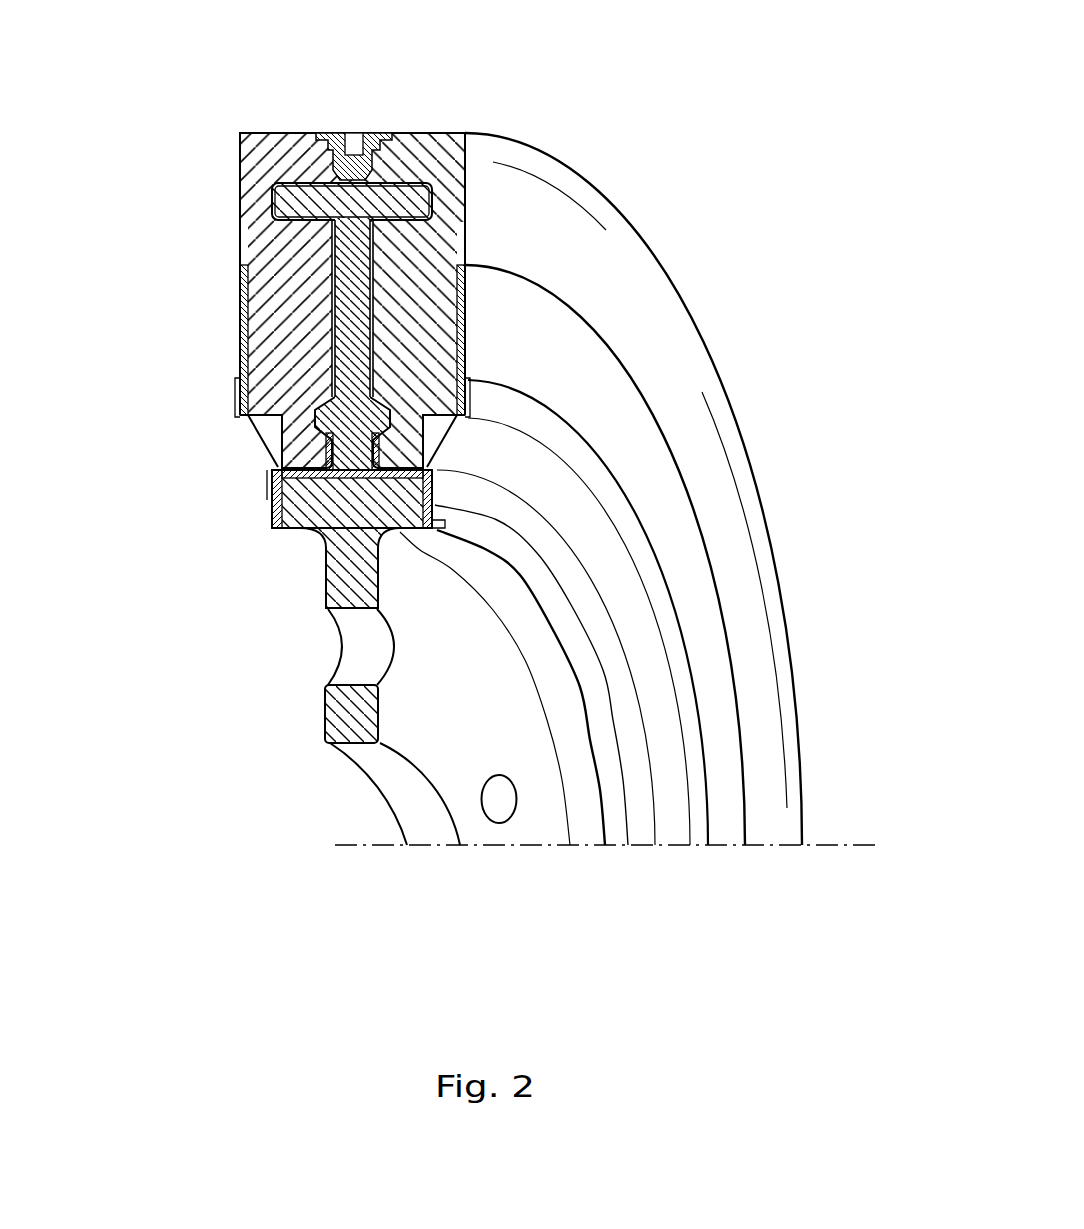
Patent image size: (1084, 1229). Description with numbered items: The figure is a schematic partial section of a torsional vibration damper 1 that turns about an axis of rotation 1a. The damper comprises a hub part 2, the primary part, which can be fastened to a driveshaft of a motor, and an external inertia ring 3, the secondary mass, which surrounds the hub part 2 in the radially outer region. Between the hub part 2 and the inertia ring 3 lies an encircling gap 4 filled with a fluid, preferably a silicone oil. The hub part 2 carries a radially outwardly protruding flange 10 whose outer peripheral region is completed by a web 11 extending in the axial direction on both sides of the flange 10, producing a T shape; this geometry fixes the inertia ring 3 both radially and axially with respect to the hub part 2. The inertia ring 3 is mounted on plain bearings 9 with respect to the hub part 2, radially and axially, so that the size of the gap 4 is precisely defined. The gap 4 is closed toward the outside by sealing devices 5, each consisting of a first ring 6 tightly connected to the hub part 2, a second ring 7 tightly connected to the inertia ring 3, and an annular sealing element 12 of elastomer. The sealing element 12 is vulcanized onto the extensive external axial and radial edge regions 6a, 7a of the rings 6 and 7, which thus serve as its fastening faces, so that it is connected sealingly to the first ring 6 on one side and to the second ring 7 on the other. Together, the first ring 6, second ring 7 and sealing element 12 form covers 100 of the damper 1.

The torsional vibration damper 1 is at (748, 314).
The axis of rotation 1a is at (812, 843).
The hub part 2 is at (302, 605).
The inertia ring 3 is at (426, 126).
The gap 4 is at (332, 253).
The sealing device 5 is at (240, 477).
The first ring 6 is at (280, 496).
The edge region 6a is at (272, 505).
The second ring 7 is at (245, 318).
The edge region 7a is at (240, 395).
The plain bearings 9 is at (283, 520).
The flange 10 is at (355, 310).
The web 11 is at (300, 196).
The sealing element 12 is at (246, 443).
The cover 100 is at (803, 660).